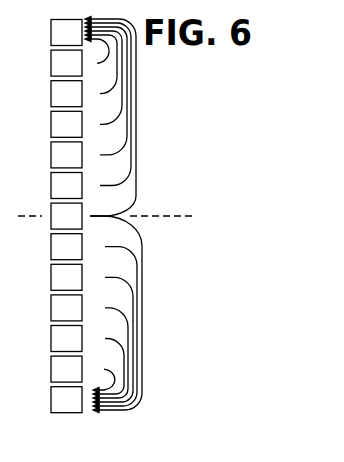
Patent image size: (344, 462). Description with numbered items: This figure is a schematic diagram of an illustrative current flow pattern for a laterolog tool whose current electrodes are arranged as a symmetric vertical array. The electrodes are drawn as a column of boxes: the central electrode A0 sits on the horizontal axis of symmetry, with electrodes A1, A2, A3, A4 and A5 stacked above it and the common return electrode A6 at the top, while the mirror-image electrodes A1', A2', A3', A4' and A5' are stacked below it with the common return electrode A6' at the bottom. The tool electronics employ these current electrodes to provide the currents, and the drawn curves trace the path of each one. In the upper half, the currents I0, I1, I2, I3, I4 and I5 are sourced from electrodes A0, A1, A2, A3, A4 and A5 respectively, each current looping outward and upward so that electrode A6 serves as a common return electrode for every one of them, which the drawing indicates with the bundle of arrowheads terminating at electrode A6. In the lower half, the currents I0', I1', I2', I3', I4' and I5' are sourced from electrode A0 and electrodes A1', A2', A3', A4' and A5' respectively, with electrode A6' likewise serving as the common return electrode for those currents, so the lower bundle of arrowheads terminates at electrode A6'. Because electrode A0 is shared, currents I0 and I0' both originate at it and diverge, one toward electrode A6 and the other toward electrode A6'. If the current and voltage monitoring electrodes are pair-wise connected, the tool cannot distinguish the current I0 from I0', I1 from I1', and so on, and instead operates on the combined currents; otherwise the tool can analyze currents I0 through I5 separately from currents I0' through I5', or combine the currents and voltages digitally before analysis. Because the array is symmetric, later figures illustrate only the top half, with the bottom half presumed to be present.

The electrode A0 is at (66, 216).
The electrode A1 is at (66, 186).
The electrode A2 is at (66, 155).
The electrode A3 is at (66, 124).
The electrode A4 is at (66, 94).
The electrode A5 is at (66, 63).
The common return electrode A6 is at (66, 33).
The electrode A1' is at (66, 247).
The electrode A2' is at (66, 277).
The electrode A3' is at (66, 308).
The electrode A4' is at (66, 339).
The electrode A5' is at (66, 369).
The common return electrode A6' is at (66, 400).
The current I0 is at (110, 119).
The current I1 is at (108, 110).
The current I2 is at (106, 97).
The current I3 is at (103, 83).
The current I4 is at (101, 70).
The current I5 is at (97, 57).
The current I0' is at (115, 314).
The current I1' is at (112, 322).
The current I2' is at (110, 334).
The current I3' is at (108, 348).
The current I4' is at (106, 362).
The current I5' is at (101, 374).